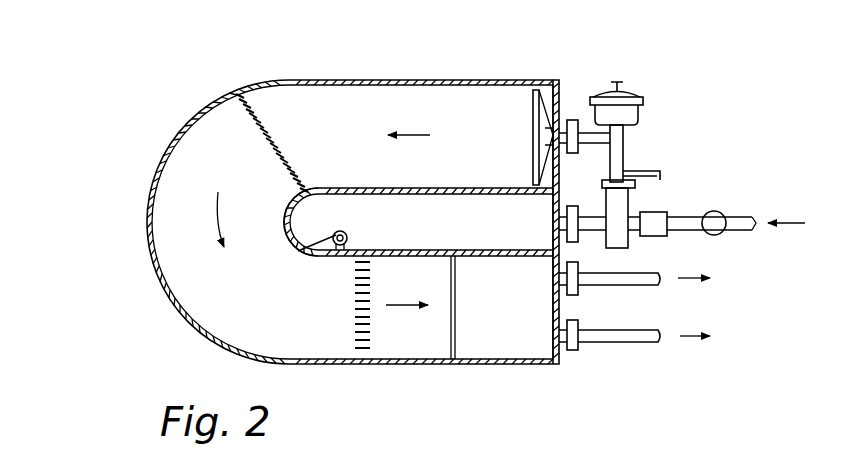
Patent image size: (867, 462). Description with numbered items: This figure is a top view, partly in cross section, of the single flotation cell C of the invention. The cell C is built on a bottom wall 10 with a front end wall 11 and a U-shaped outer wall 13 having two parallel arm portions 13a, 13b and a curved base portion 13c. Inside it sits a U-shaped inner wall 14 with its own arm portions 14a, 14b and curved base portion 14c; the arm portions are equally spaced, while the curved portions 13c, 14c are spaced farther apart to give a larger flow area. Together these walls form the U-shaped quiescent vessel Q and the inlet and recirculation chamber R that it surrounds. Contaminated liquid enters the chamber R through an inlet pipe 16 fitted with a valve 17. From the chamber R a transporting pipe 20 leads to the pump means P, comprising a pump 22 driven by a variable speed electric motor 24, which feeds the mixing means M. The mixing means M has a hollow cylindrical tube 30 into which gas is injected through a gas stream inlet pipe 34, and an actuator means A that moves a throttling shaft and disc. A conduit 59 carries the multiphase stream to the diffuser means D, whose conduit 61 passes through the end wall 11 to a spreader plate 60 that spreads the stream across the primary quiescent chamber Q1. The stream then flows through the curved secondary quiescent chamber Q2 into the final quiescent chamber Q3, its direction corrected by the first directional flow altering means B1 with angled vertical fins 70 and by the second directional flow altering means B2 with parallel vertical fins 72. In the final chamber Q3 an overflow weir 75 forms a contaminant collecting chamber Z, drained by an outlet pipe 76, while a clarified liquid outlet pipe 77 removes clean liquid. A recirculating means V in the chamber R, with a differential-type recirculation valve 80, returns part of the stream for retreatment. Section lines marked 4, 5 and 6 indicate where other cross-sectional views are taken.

The bottom wall 10 is at (198, 247).
The front end wall 11 is at (560, 85).
The U-shaped outer wall 13 is at (282, 80).
The arm portion 13a is at (362, 80).
The arm portion 13b is at (400, 364).
The curved base portion 13c is at (147, 207).
The U-shaped inner wall 14 is at (358, 188).
The arm portion 14a is at (424, 188).
The arm portion 14b is at (447, 250).
The curved base portion 14c is at (284, 218).
The inlet pipe 16 is at (702, 228).
The valve 17 is at (722, 212).
The transporting pipe 20 is at (560, 213).
The pump 22 is at (606, 200).
The variable speed electric motor 24 is at (655, 212).
The hollow cylindrical tube 30 is at (628, 140).
The gas stream inlet pipe 34 is at (657, 172).
The conduit 59 is at (590, 128).
The spreader plate 60 is at (537, 166).
The conduit 61 is at (578, 120).
The vertical fins 70 is at (256, 118).
The vertical fins 72 is at (356, 296).
The overflow weir 75 is at (456, 325).
The outlet pipe 76 is at (563, 288).
The clarified liquid outlet pipe 77 is at (563, 350).
The differential-type recirculation valve 80 is at (298, 250).
The section line 4 is at (95, 137).
The section line 5 is at (97, 335).
The section line 6 is at (340, 198).
The actuator means A is at (646, 95).
The first directional flow altering means B1 is at (243, 109).
The second directional flow altering means B2 is at (356, 323).
The flotation cell C is at (318, 78).
The diffuser means D is at (530, 110).
The mixing means M is at (628, 152).
The pump means P is at (640, 249).
The U-shaped quiescent vessel Q is at (394, 104).
The primary quiescent chamber Q1 is at (474, 150).
The curved secondary quiescent chamber Q2 is at (202, 198).
The final quiescent chamber Q3 is at (420, 294).
The inlet and recirculation chamber R is at (441, 241).
The recirculating means V is at (352, 232).
The contaminant collecting chamber Z is at (511, 300).